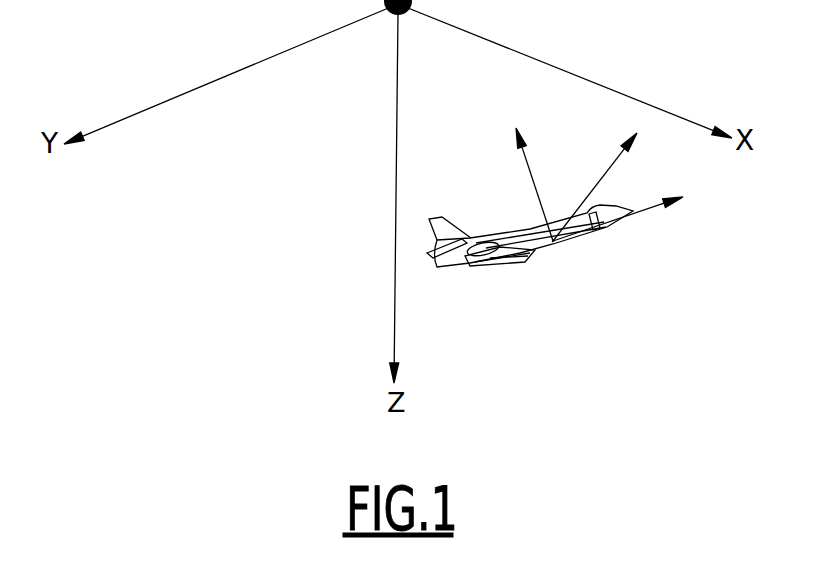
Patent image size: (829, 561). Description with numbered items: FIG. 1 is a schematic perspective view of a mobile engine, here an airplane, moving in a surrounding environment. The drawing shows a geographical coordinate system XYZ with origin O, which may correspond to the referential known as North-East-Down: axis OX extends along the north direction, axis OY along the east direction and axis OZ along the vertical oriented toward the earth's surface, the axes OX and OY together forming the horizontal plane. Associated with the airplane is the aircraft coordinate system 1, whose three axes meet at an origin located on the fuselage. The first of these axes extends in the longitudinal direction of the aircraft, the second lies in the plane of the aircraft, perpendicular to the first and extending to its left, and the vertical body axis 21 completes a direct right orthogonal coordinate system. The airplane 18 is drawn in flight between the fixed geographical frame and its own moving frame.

The aircraft-fixed reference frame (O1, X1, Y1) 1 is at (632, 206).
The Z1 axis of aircraft-fixed frame 21 is at (529, 164).
The aircraft 18 is at (628, 379).